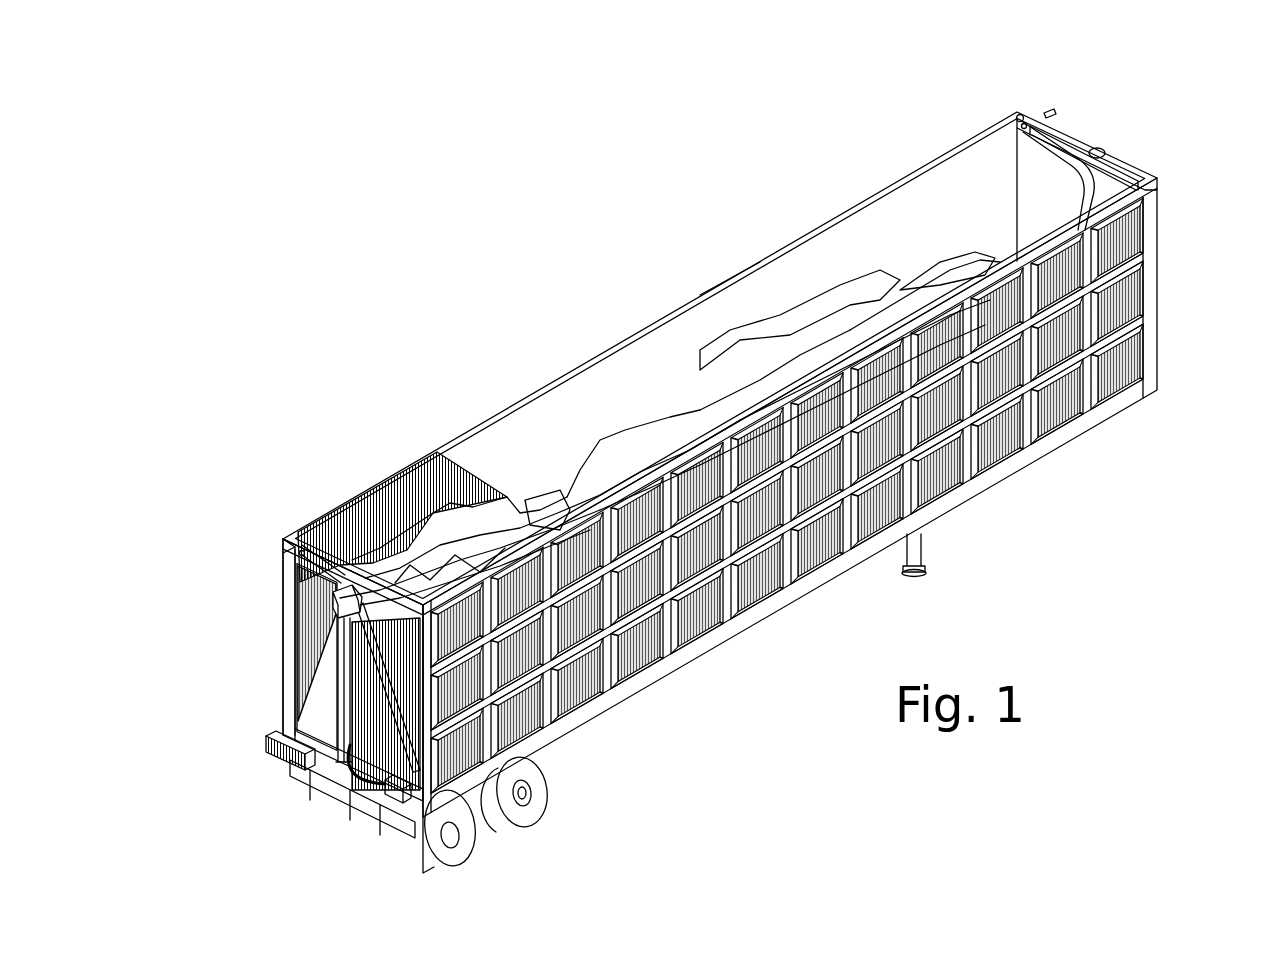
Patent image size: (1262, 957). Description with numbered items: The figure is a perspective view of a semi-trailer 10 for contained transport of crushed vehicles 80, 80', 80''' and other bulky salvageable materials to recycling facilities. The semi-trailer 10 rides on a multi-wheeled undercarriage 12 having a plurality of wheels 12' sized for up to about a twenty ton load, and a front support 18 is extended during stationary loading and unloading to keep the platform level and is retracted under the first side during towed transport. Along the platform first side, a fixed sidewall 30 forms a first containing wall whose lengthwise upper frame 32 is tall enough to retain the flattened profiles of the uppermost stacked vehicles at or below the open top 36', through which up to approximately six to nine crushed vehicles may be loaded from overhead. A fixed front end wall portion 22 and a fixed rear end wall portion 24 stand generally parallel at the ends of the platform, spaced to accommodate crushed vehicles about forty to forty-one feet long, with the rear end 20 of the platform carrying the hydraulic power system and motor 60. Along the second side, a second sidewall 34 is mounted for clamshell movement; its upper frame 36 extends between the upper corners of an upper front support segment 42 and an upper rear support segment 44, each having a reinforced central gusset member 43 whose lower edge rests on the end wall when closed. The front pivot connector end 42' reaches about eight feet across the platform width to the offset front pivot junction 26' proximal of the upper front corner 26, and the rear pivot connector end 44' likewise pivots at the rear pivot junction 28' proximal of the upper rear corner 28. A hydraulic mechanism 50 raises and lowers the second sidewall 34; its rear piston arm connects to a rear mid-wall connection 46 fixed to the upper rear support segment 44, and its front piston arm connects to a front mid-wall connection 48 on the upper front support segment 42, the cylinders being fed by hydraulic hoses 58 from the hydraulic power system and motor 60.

The semi-trailer 10 is at (378, 398).
The multi-wheeled undercarriage 12 is at (519, 744).
The wheels 12' is at (405, 823).
The front support 18 is at (932, 536).
The rear end of the platform 20 is at (272, 750).
The front end wall portion 22 is at (1034, 213).
The rear end wall portion 24 is at (305, 690).
The upper front corner 26 is at (989, 87).
The front pivot junction 26' is at (1022, 97).
The upper rear corner 28 is at (256, 525).
The rear pivot junction 28' is at (259, 548).
The fixed sidewall 30 is at (584, 399).
The upper frame 32 is at (614, 340).
The second sidewall 34 is at (1128, 298).
The upper frame 36 is at (820, 472).
The open top 36' is at (730, 263).
The upper front support segment 42 is at (1119, 159).
The front pivot connector end 42' is at (1084, 137).
The reinforced central gusset member 43 is at (1097, 193).
The upper rear support segment 44 is at (555, 791).
The rear pivot connector end 44' is at (307, 527).
The rear mid-wall connection 46 is at (343, 586).
The front mid-wall connection 48 is at (1103, 152).
The hydraulic mechanism 50 is at (238, 636).
The hydraulic hoses 58 is at (313, 770).
The hydraulic power system and motor 60 is at (392, 792).
The crushed vehicles 80 is at (470, 511).
The crushed vehicle 80' is at (644, 425).
The crushed vehicle 80''' is at (879, 283).